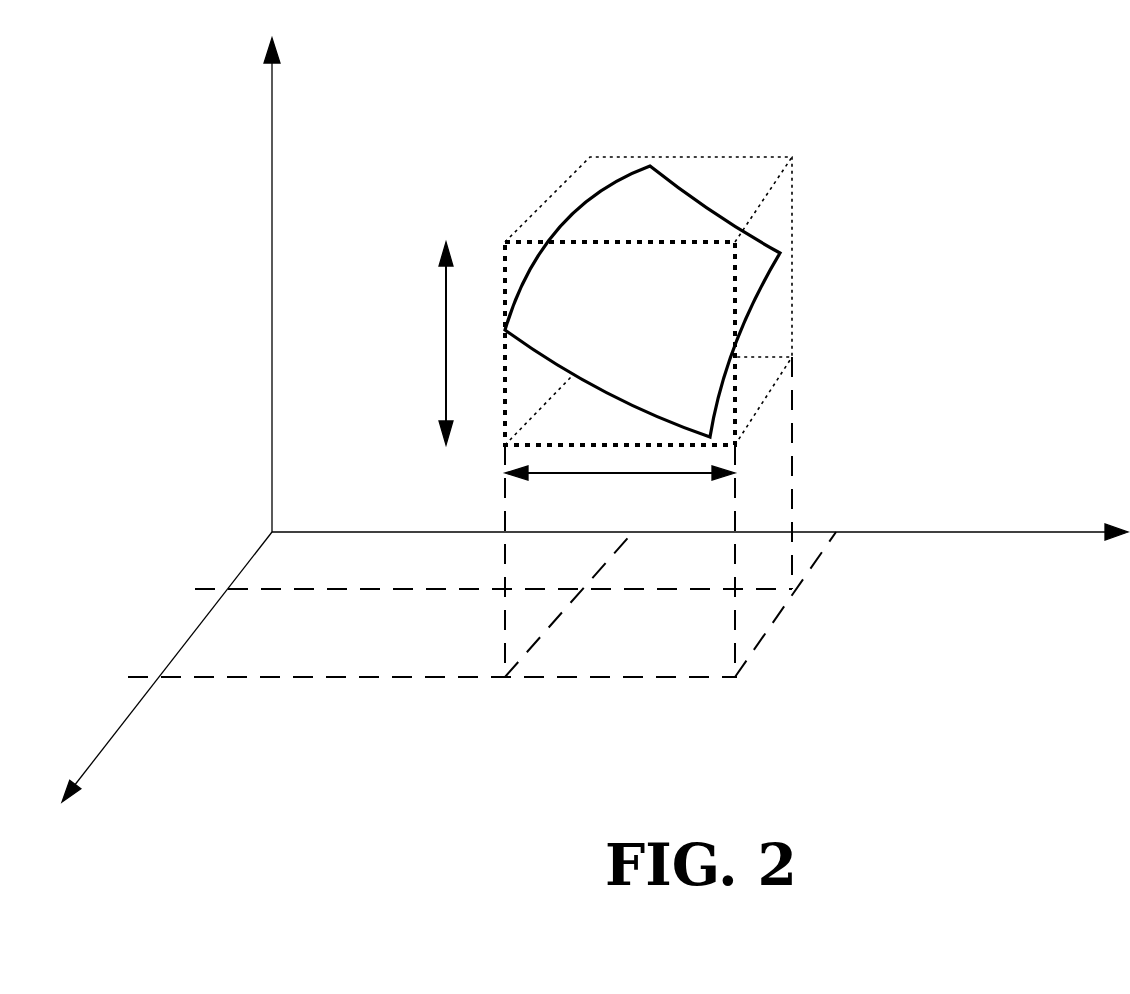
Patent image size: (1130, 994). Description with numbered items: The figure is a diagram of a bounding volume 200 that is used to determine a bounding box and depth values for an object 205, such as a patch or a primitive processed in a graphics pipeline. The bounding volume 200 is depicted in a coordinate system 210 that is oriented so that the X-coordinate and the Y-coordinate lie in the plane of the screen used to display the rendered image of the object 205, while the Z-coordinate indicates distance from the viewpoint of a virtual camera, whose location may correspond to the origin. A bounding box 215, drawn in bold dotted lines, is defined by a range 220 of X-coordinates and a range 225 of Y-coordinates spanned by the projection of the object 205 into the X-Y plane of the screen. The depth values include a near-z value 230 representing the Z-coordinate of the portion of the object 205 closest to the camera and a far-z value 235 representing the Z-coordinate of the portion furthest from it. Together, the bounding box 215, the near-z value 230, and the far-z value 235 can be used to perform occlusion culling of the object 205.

The bounding volume 200 is at (792, 233).
The object 205 is at (683, 193).
The coordinate system 210 is at (270, 183).
The bounding box 215 is at (547, 240).
The range of X-coordinates 220 is at (618, 477).
The range of Y-coordinates 225 is at (445, 358).
The near-z value 230 is at (212, 589).
The far-z value 235 is at (142, 677).